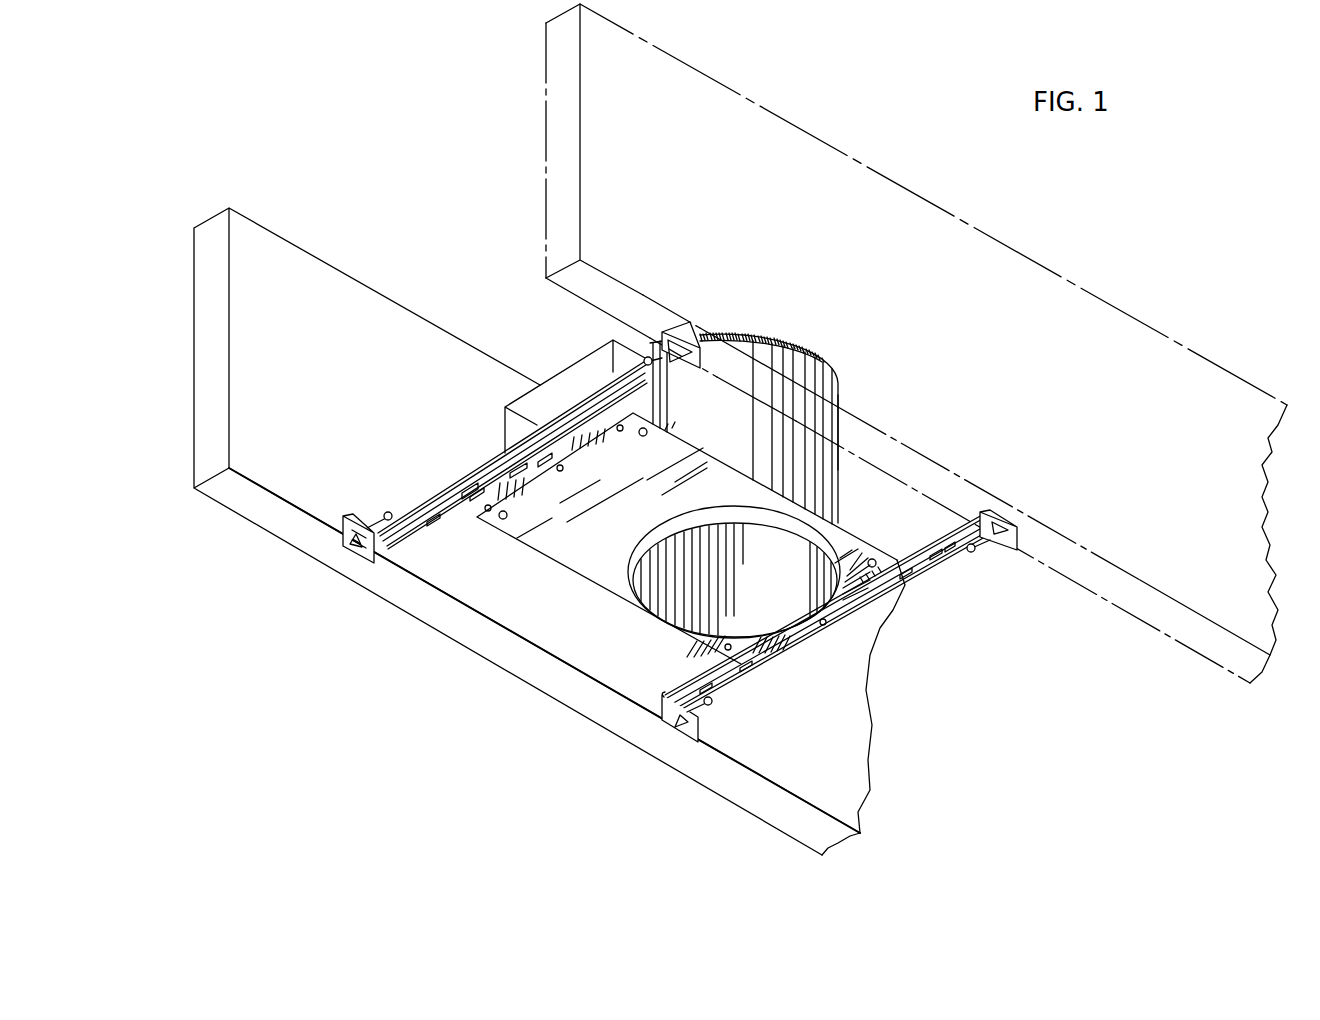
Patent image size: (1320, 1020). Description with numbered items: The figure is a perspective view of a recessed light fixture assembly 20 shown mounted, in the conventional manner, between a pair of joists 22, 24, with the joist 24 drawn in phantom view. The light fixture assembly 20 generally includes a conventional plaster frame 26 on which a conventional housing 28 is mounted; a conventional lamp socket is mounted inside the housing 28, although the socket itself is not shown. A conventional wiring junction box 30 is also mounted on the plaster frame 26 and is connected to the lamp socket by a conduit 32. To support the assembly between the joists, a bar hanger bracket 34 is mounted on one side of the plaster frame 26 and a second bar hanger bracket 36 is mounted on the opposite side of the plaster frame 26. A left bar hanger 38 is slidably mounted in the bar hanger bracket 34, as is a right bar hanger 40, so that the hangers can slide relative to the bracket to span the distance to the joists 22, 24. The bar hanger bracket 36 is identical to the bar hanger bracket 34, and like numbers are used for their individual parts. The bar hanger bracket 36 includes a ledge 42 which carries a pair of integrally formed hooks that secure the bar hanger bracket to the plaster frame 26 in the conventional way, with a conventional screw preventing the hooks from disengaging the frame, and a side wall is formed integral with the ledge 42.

The recessed light fixture assembly 20 is at (828, 355).
The joist 22 is at (458, 628).
The joist 24 is at (1212, 648).
The plaster frame 26 is at (607, 572).
The housing 28 is at (838, 390).
The wiring junction box 30 is at (570, 377).
The conduit 32 is at (756, 331).
The bar hanger bracket 34 is at (473, 512).
The bar hanger bracket 36 is at (843, 617).
The left bar hanger 38 is at (953, 553).
The right bar hanger 40 is at (676, 683).
The ledge 42 is at (770, 653).